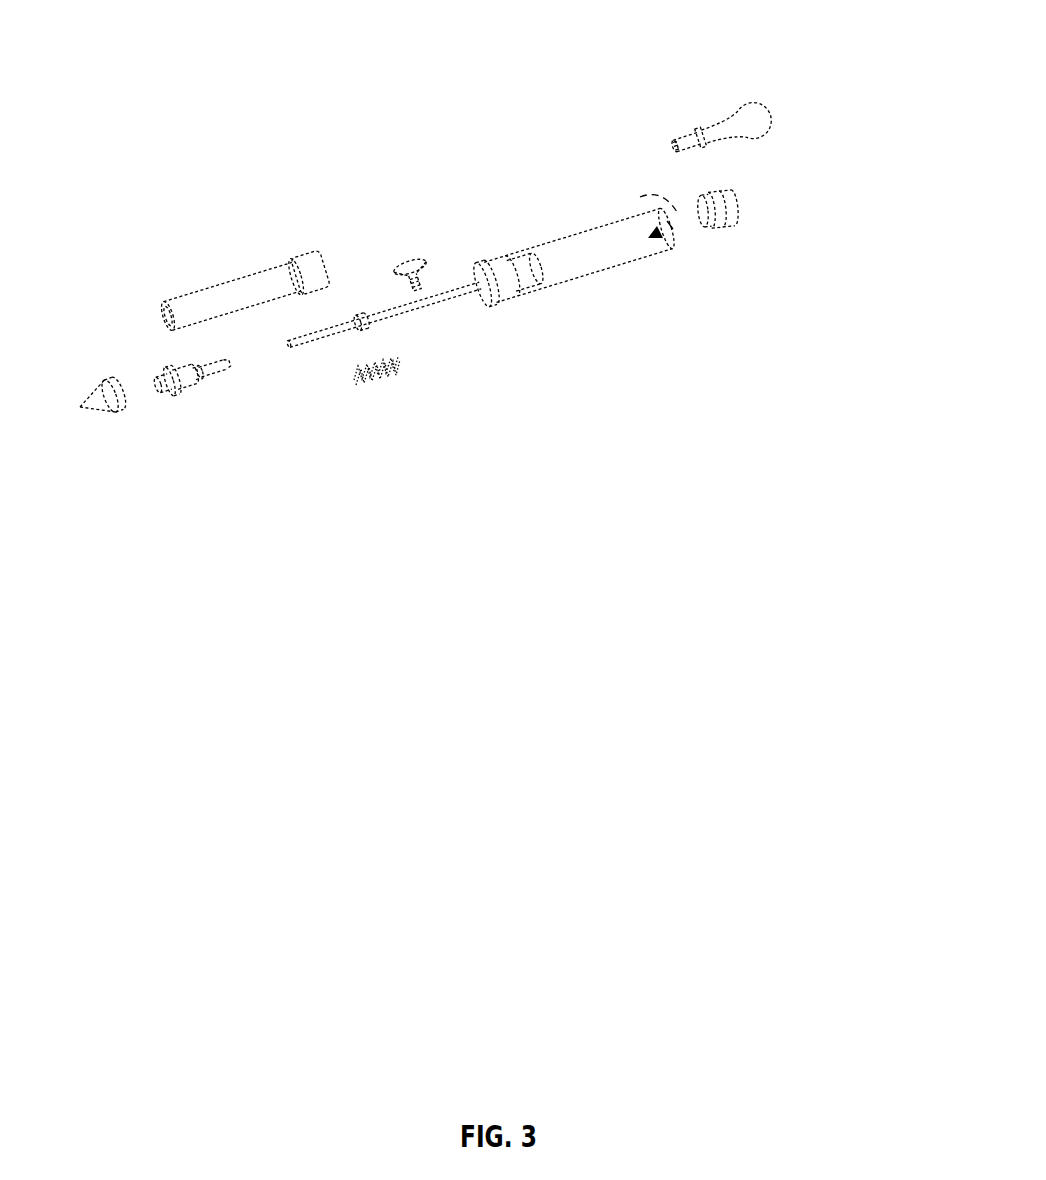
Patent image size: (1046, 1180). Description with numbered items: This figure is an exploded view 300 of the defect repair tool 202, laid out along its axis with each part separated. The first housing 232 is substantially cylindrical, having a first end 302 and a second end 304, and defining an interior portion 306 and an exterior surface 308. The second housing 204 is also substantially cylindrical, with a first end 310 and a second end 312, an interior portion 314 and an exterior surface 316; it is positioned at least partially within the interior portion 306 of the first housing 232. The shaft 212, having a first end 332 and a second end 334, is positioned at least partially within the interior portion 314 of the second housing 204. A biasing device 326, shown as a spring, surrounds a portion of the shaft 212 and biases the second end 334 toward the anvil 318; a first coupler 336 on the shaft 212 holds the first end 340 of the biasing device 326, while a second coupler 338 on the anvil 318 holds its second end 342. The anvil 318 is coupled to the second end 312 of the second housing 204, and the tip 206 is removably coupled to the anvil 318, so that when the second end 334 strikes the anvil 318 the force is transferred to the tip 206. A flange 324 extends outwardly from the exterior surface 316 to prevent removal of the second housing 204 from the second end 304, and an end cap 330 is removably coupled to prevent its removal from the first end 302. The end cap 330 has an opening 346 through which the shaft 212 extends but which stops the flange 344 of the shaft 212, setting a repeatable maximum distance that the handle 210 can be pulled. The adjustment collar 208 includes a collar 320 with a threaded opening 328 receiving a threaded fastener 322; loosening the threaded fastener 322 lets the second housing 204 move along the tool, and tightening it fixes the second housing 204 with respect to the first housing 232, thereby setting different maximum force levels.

The exploded view 300 is at (617, 74).
The defect repair tool 202 is at (529, 183).
The second housing 204 is at (243, 281).
The tip 206 is at (117, 415).
The adjustment collar 208 is at (460, 250).
The handle 210 is at (763, 132).
The shaft 212 is at (458, 303).
The first housing 232 is at (597, 271).
The first end 302 is at (692, 274).
The second end 304 is at (531, 315).
The interior portion 306 is at (637, 203).
The exterior surface 308 is at (550, 243).
The first end 310 is at (287, 258).
The second end 312 is at (178, 300).
The interior portion 314 is at (329, 254).
The exterior surface 316 is at (238, 316).
The anvil 318 is at (193, 388).
The collar 320 is at (503, 306).
The threaded fastener 322 is at (404, 258).
The flange 324 is at (300, 260).
The biasing device 326 is at (388, 388).
The threaded opening 328 is at (495, 253).
The end cap 330 is at (730, 232).
The first end 332 is at (538, 279).
The second end 334 is at (299, 348).
The first coupler 336 is at (366, 323).
The second coupler 338 is at (200, 375).
The first end 340 is at (406, 386).
The second end 342 is at (369, 394).
The flange 344 is at (357, 314).
The opening 346 is at (697, 213).